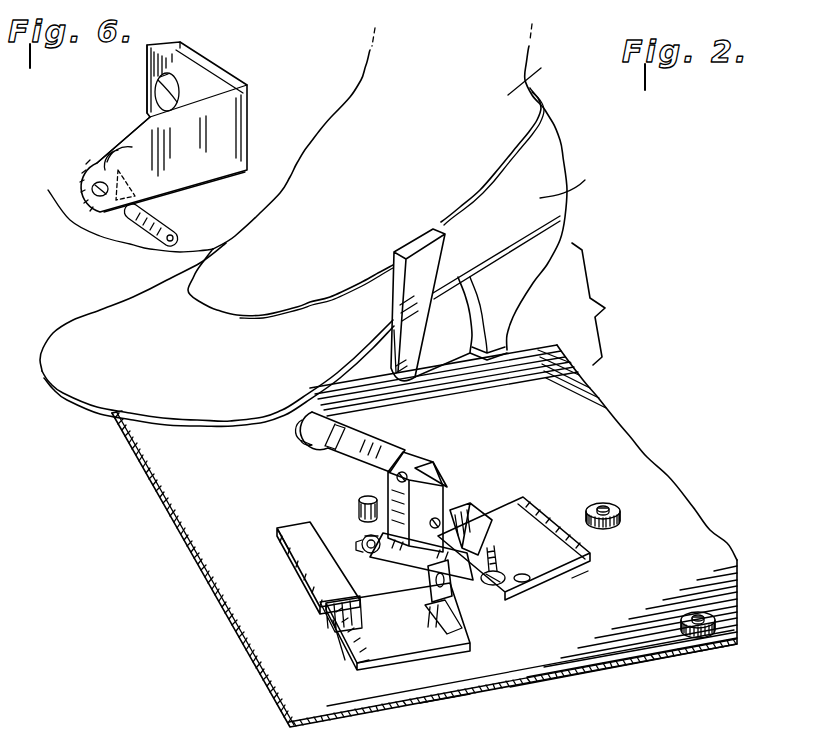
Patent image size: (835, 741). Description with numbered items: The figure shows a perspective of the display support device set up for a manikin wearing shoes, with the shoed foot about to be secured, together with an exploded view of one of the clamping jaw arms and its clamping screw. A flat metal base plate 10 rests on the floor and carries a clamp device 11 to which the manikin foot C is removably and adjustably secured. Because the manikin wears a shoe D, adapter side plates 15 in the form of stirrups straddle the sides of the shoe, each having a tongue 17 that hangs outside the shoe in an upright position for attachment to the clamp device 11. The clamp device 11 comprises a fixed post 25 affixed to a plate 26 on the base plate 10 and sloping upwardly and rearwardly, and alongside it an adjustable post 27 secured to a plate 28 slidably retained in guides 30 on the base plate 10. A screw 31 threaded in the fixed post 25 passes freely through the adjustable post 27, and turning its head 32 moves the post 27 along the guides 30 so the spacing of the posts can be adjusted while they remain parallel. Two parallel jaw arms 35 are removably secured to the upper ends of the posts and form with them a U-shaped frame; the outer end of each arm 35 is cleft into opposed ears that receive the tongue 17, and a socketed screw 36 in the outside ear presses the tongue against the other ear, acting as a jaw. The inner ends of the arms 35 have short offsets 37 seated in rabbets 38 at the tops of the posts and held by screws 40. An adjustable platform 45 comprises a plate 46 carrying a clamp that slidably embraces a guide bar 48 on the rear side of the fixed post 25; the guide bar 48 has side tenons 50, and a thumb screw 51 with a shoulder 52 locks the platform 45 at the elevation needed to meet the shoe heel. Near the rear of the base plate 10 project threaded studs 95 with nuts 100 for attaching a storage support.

In FIG. 2, the base plate 10 is at (230, 581).
In FIG. 2, the clamp device 11 is at (452, 660).
In FIG. 2, the adapter side plates 15 is at (420, 232).
In FIG. 2, the tongue 17 is at (417, 346).
In FIG. 2, the fixed post 25 is at (357, 638).
In FIG. 2, the plate 26 is at (370, 660).
In FIG. 2, the adjustable post 27 is at (438, 486).
In FIG. 2, the plate 28 is at (340, 547).
In FIG. 2, the guides 30 is at (282, 547).
In FIG. 2, the screw 31 is at (377, 610).
In FIG. 2, the head 32 is at (366, 487).
In FIG. 6, the jaw arms 35 is at (210, 170).
In FIG. 2, the jaw arms 35 is at (353, 440).
In FIG. 6, the screw 36 is at (178, 228).
In FIG. 2, the screw 36 is at (362, 560).
In FIG. 6, the offsets 37 is at (227, 73).
In FIG. 2, the offsets 37 is at (433, 477).
In FIG. 2, the rabbets 38 is at (470, 480).
In FIG. 2, the screws 40 is at (410, 470).
In FIG. 2, the adjustable platform 45 is at (567, 573).
In FIG. 2, the plate 46 is at (537, 507).
In FIG. 2, the guide bar 48 is at (445, 624).
In FIG. 2, the side tenons 50 is at (402, 643).
In FIG. 2, the thumb screw 51 is at (521, 582).
In FIG. 2, the shoulder 52 is at (487, 558).
In FIG. 2, the threaded studs 95 is at (605, 507).
In FIG. 2, the nuts 100 is at (624, 520).
In FIG. 2, the manikin foot C is at (529, 73).
In FIG. 2, the shoe D is at (564, 178).